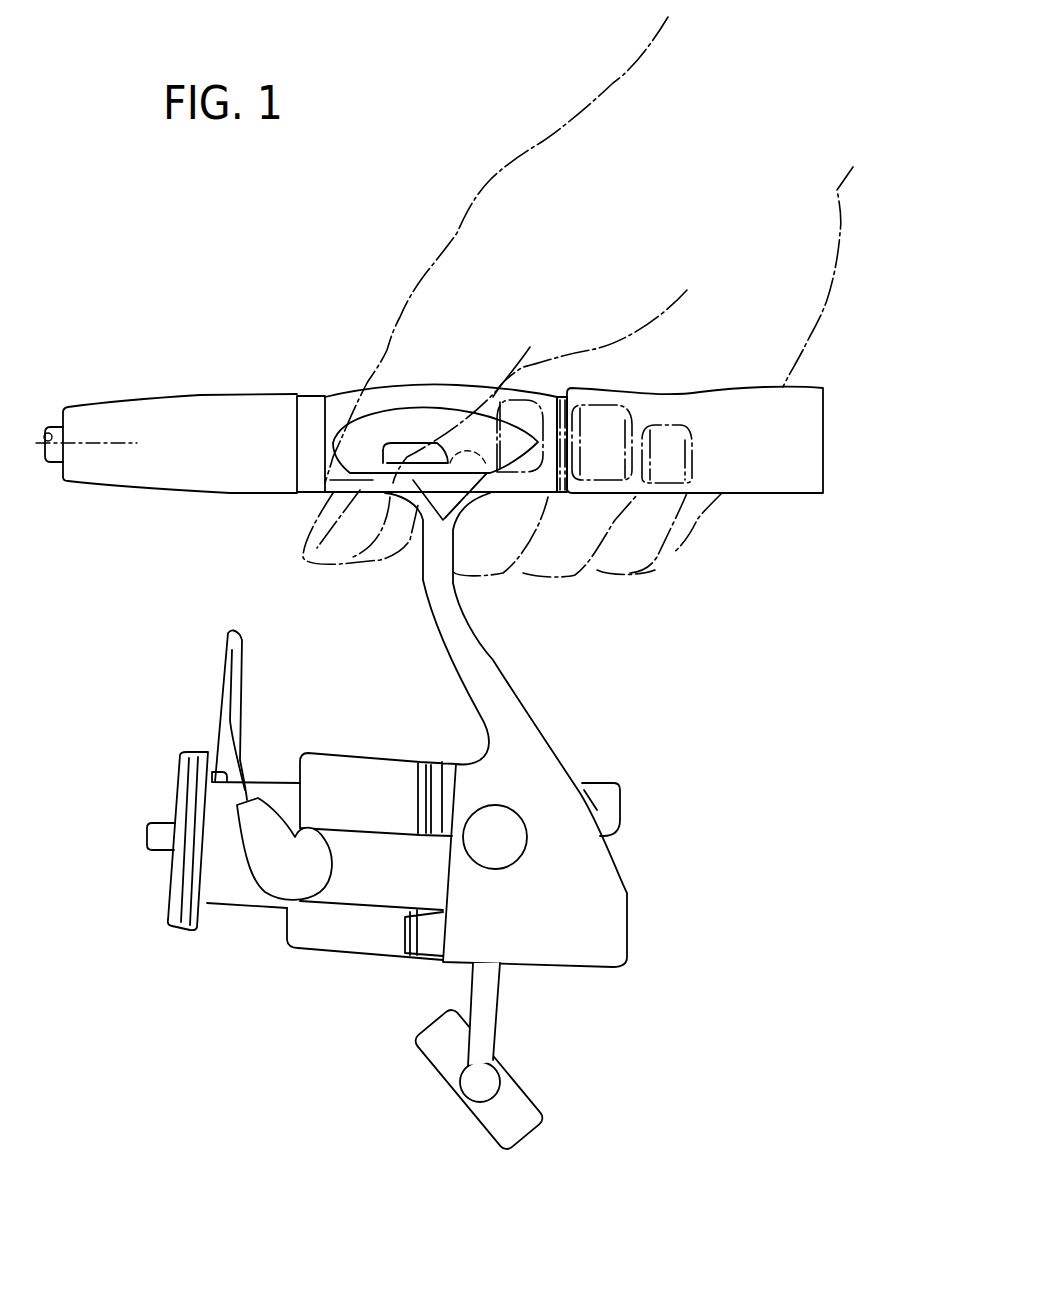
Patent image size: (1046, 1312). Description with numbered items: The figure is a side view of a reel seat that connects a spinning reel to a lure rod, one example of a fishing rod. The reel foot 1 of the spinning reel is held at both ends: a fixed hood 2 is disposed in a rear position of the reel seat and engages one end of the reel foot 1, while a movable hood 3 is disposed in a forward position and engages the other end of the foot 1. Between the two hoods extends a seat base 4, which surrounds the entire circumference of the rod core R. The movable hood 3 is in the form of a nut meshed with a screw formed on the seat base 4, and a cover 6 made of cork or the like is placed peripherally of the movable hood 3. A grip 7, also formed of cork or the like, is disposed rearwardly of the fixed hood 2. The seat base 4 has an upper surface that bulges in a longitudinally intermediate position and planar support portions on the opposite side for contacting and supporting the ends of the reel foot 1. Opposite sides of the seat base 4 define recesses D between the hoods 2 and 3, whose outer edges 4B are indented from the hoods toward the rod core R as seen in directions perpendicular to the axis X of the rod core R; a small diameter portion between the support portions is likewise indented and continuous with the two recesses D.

The reel foot 1 is at (445, 518).
The fixed hood 2 is at (564, 492).
The movable hood 3 is at (308, 407).
The seat base 4 is at (400, 385).
The outer edges 4B is at (420, 397).
The cover 6 is at (193, 396).
The grip 7 is at (777, 480).
The recesses D is at (460, 397).
The rod core R is at (59, 427).
The axis X is at (47, 450).